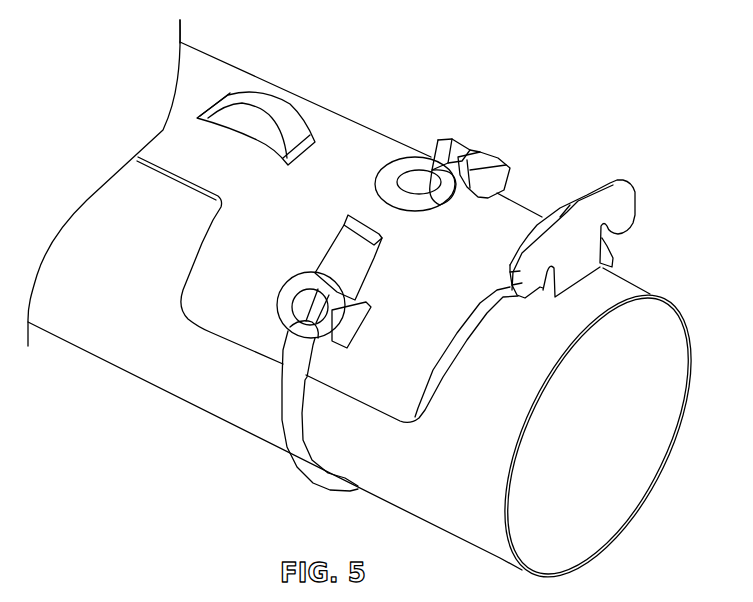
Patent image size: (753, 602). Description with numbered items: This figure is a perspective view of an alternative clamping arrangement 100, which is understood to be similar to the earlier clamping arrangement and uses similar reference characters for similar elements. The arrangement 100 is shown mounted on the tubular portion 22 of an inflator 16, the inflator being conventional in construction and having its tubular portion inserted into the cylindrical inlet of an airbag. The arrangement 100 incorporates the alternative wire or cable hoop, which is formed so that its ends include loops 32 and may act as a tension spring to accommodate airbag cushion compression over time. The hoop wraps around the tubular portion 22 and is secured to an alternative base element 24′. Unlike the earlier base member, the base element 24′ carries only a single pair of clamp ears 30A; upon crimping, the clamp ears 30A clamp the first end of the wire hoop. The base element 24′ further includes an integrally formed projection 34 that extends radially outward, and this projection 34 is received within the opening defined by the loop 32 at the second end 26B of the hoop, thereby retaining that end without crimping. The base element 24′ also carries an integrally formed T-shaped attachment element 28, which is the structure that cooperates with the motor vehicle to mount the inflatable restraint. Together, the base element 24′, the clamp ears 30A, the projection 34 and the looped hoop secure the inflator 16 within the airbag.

The clamping arrangement 100 is at (525, 72).
The inflator 16 is at (647, 290).
The tubular portion 22 is at (467, 518).
The base element 24′ is at (527, 200).
The second end 26B is at (292, 373).
The T-shaped attachment element 28 is at (610, 184).
The clamp ears 30A is at (450, 140).
The loop 32 is at (378, 176).
The projection 34 is at (305, 303).